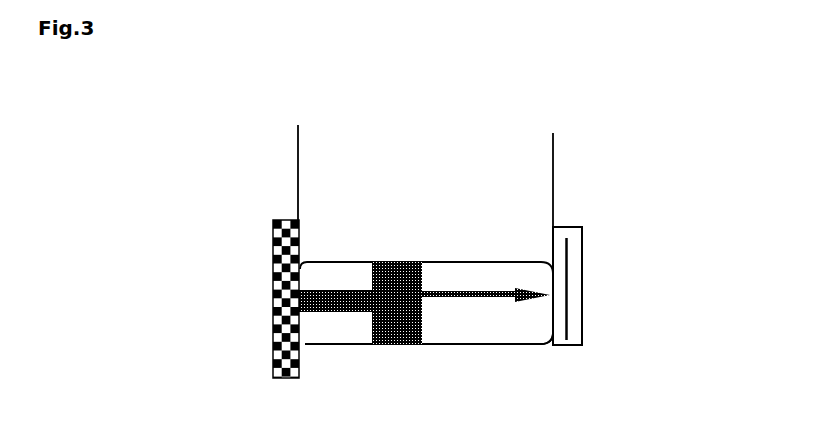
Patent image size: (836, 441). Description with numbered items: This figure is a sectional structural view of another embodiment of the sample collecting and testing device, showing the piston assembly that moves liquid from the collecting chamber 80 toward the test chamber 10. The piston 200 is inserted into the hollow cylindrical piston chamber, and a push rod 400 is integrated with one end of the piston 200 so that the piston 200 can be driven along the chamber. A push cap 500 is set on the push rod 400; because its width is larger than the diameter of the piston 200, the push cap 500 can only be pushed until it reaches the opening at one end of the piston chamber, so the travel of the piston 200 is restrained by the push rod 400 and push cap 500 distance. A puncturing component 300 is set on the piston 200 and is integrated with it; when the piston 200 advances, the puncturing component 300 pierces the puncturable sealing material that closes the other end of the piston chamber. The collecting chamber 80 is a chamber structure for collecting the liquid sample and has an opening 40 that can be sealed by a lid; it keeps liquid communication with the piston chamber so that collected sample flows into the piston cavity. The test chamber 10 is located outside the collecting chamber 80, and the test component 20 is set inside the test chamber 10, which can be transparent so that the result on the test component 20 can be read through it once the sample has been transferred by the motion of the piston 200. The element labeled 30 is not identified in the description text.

The test chamber 10 is at (577, 272).
The test component 20 is at (572, 290).
The barrel outlet end 30 is at (542, 345).
The opening 40 is at (318, 133).
The collecting chamber 80 is at (463, 188).
The piston 200 is at (372, 342).
The puncturing component 300 is at (463, 298).
The push rod 400 is at (346, 290).
The push cap 500 is at (272, 300).